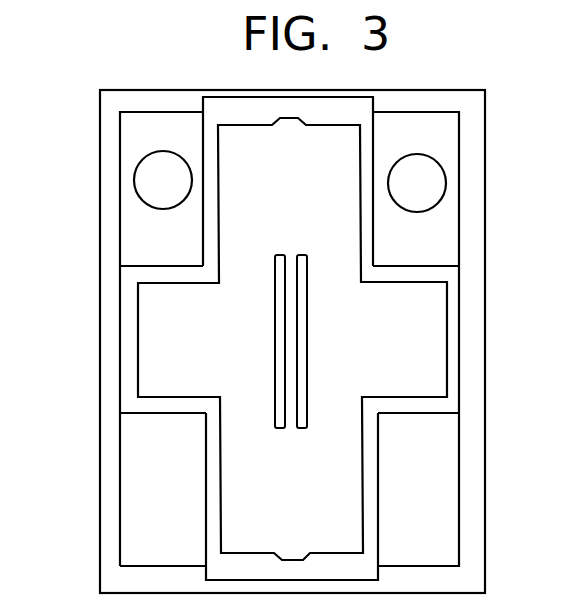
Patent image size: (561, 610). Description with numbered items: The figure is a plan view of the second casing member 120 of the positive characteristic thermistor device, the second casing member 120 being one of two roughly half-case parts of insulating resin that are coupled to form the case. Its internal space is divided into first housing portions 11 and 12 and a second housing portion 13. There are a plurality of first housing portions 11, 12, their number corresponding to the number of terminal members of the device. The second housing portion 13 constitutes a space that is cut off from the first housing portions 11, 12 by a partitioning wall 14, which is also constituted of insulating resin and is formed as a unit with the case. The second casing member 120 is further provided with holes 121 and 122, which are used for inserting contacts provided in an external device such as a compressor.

The first housing portion 11 is at (428, 130).
The first housing portion 12 is at (132, 152).
The hole 121 is at (427, 186).
The hole 122 is at (150, 177).
The second housing portion 13 is at (200, 307).
The partitioning wall 14 is at (207, 242).
The second casing member 120 is at (105, 522).